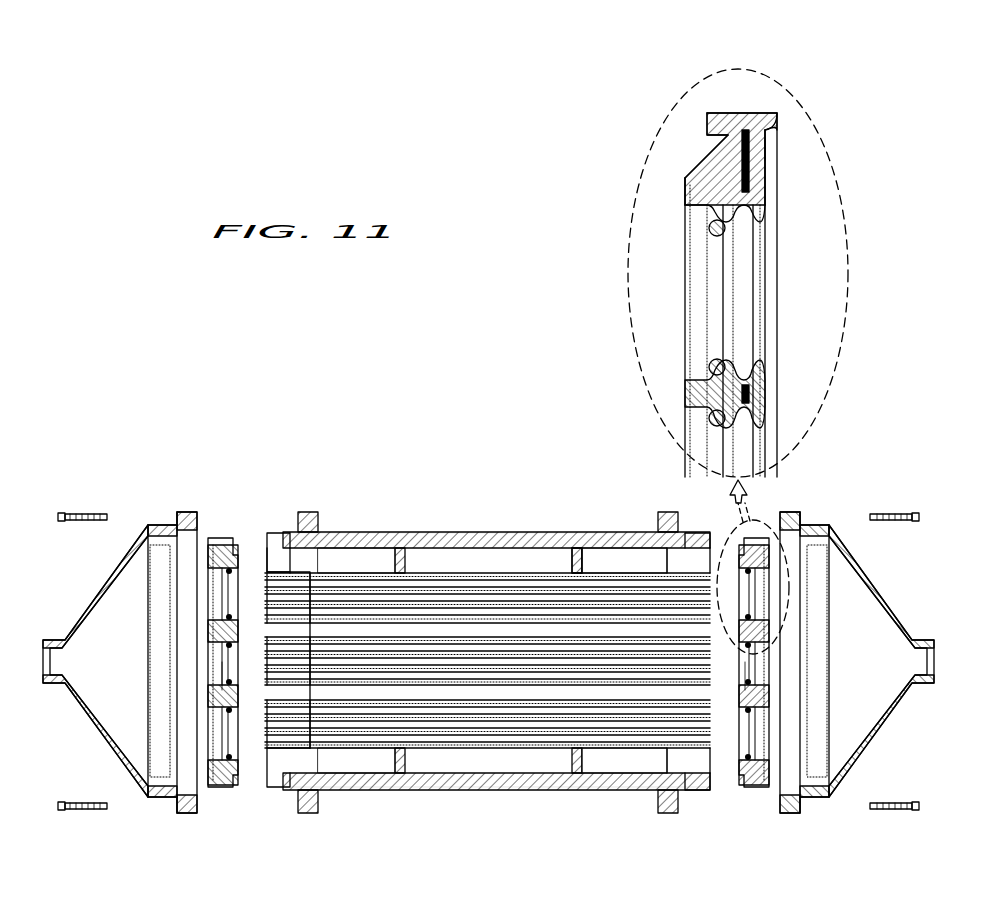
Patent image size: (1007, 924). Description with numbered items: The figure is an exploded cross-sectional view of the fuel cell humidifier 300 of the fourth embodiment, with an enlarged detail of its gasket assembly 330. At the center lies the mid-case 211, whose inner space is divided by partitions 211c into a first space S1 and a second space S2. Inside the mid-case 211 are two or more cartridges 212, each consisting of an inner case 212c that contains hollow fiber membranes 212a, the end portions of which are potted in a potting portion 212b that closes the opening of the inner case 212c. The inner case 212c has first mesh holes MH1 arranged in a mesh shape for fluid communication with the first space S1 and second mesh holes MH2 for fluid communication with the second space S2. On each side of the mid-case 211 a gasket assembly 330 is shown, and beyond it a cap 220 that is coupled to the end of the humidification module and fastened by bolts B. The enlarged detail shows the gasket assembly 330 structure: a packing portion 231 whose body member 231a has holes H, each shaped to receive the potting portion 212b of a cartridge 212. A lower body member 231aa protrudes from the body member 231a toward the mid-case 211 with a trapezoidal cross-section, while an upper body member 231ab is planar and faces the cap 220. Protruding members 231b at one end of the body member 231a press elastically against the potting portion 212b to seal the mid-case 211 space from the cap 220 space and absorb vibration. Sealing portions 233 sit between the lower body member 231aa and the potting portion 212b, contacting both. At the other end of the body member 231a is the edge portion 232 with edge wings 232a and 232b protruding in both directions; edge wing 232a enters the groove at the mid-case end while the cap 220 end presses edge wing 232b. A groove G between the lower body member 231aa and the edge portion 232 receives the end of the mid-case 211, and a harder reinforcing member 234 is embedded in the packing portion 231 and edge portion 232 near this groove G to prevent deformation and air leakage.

The mid-case 211 is at (429, 540).
The partition 211c is at (574, 558).
The cartridge 212 is at (330, 447).
The hollow fiber membranes 212a is at (283, 583).
The potting portion 212b is at (265, 583).
The inner case 212c is at (307, 583).
The cap 220 is at (104, 592).
The packing portion 231 is at (915, 185).
The body member 231a is at (759, 186).
The lower body member 231aa is at (688, 176).
The upper body member 231ab is at (769, 150).
The protruding member 231b is at (765, 202).
The edge portion 232 is at (745, 113).
The edge wing 232a is at (705, 118).
The edge wing 232b is at (781, 117).
The sealing portion 233 is at (709, 229).
The reinforcing member 234 is at (751, 172).
The fuel cell humidifier 300 is at (505, 486).
The gasket assembly 330 is at (221, 798).
The bolt B is at (881, 808).
The groove G is at (724, 150).
The hole H is at (237, 662).
The first mesh holes MH1 is at (352, 571).
The second mesh holes MH2 is at (626, 571).
The first space S1 is at (357, 763).
The second space S2 is at (621, 763).